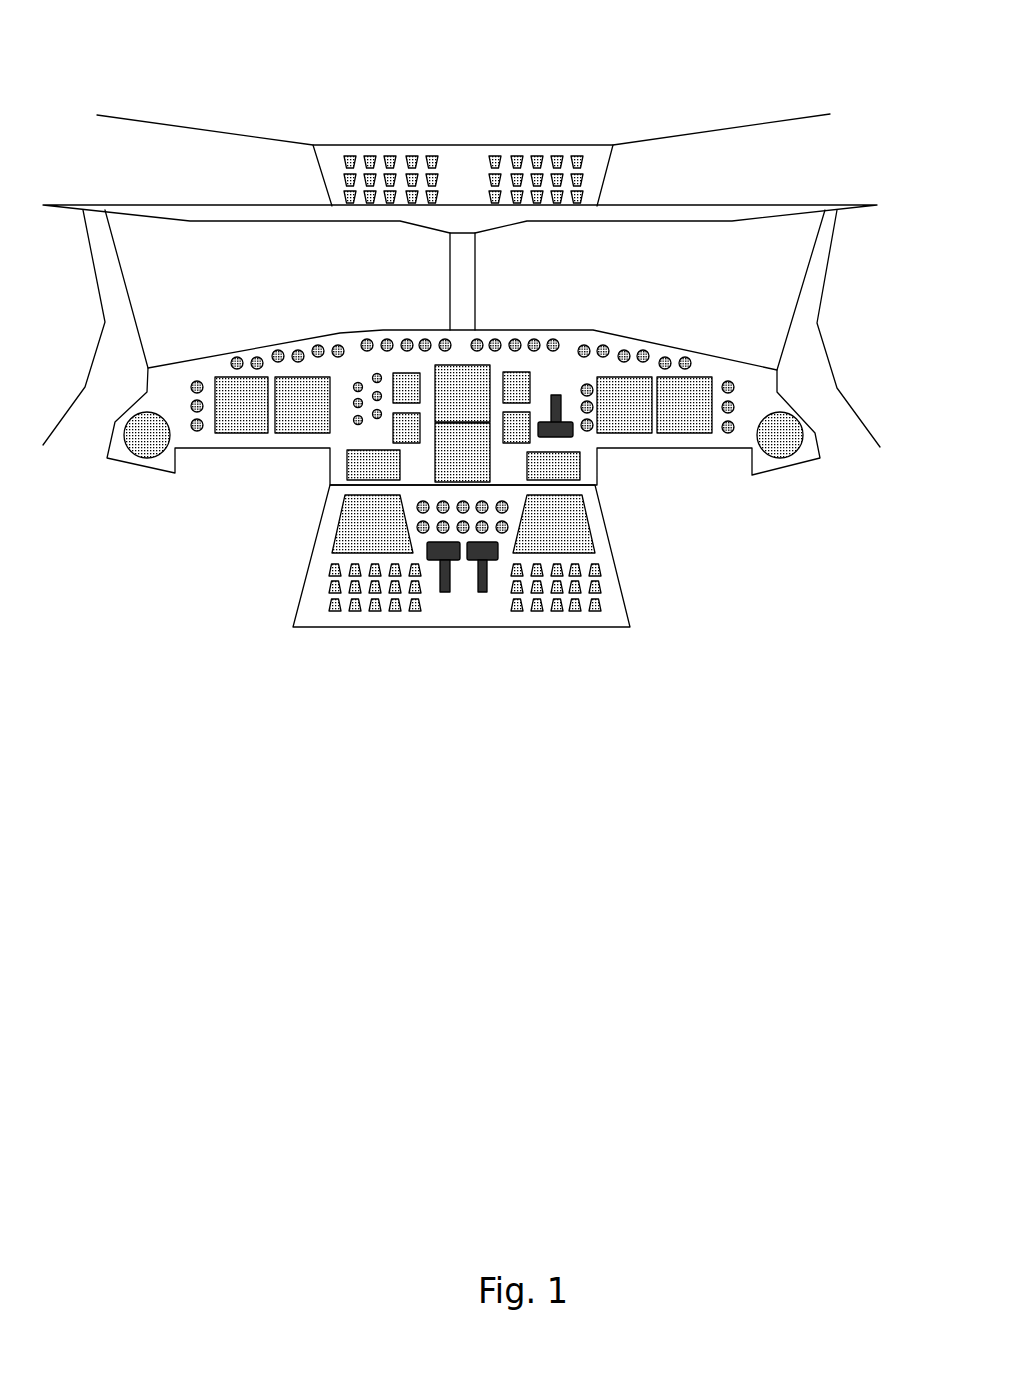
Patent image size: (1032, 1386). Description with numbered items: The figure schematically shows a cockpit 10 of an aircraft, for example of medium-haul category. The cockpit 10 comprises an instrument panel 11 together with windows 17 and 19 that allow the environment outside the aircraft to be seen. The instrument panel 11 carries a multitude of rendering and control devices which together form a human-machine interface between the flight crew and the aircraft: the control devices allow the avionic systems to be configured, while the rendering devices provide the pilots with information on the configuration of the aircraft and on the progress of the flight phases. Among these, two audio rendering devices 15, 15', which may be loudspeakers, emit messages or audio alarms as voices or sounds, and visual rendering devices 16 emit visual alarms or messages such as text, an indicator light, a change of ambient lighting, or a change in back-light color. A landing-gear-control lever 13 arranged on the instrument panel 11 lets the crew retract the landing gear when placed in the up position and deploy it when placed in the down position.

The cockpit 10 is at (258, 112).
The instrument panel 11 is at (347, 330).
The landing-gear-control lever 13 is at (555, 390).
The audio rendering device 15 is at (780, 487).
The audio rendering device 15' is at (142, 488).
The visual rendering devices 16 is at (250, 413).
The window 17 is at (718, 328).
The window 19 is at (860, 360).